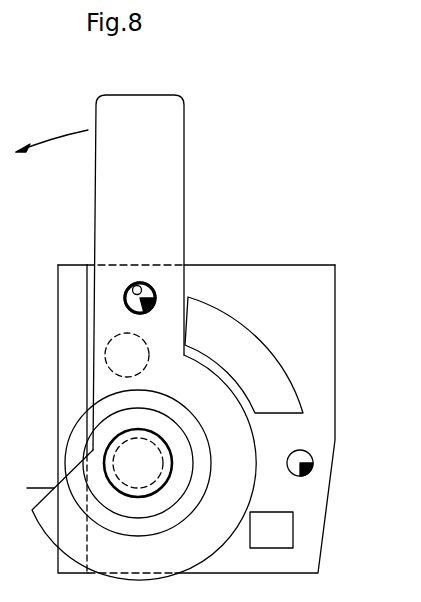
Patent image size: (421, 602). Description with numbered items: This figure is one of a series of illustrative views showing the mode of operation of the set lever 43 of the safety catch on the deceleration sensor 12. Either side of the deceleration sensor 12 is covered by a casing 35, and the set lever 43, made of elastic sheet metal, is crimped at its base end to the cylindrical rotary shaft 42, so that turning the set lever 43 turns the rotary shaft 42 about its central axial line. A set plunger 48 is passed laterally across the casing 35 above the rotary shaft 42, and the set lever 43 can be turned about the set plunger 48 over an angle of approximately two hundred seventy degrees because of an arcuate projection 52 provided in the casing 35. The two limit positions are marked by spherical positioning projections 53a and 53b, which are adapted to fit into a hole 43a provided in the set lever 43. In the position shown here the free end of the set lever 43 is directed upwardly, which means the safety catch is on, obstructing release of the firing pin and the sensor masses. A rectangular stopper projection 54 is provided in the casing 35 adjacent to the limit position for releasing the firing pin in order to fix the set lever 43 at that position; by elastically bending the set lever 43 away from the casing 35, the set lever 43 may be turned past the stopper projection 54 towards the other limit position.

The deceleration sensor 12 is at (313, 250).
The casing 35 is at (255, 272).
The rotary shaft 42 is at (113, 456).
The set lever 43 is at (185, 187).
The hole 43a is at (143, 283).
The set plunger 48 is at (112, 340).
The arcuate projection 52 is at (272, 350).
The spherical positioning projection 53a is at (155, 293).
The spherical positioning projection 53b is at (312, 455).
The rectangular stopper projection 54 is at (293, 520).